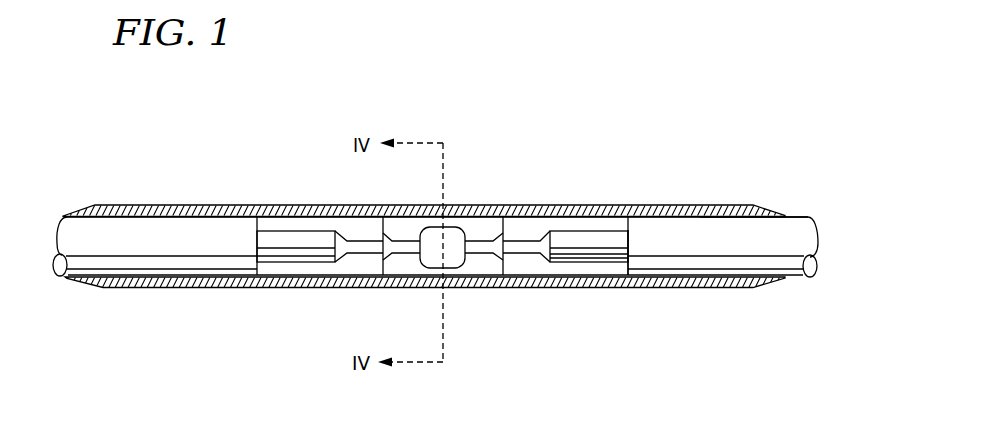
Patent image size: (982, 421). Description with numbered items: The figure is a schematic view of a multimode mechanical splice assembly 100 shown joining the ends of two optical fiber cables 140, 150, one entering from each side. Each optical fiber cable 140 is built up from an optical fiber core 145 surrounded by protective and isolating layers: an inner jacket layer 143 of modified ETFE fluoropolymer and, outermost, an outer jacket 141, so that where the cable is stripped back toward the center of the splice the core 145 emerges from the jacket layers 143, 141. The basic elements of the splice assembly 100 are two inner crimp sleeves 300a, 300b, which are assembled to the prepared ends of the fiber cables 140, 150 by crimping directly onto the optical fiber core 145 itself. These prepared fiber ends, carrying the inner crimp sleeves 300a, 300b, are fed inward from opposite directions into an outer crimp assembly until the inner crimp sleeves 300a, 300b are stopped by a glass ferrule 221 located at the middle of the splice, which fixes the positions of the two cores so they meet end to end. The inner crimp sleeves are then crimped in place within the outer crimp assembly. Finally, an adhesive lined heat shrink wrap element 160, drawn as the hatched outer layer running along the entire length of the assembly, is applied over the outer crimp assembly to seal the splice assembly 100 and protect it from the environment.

The splice assembly 100 is at (258, 141).
The shrink wrap element 160 is at (92, 205).
The optical fiber cable 150 is at (55, 253).
The optical fiber cable 140 is at (813, 255).
The outer jacket 141 is at (788, 232).
The inner jacket layer 143 is at (585, 240).
The optical fiber core 145 is at (518, 247).
The glass ferrule 221 is at (475, 208).
The inner crimp sleeve 300a is at (350, 268).
The inner crimp sleeve 300b is at (520, 268).